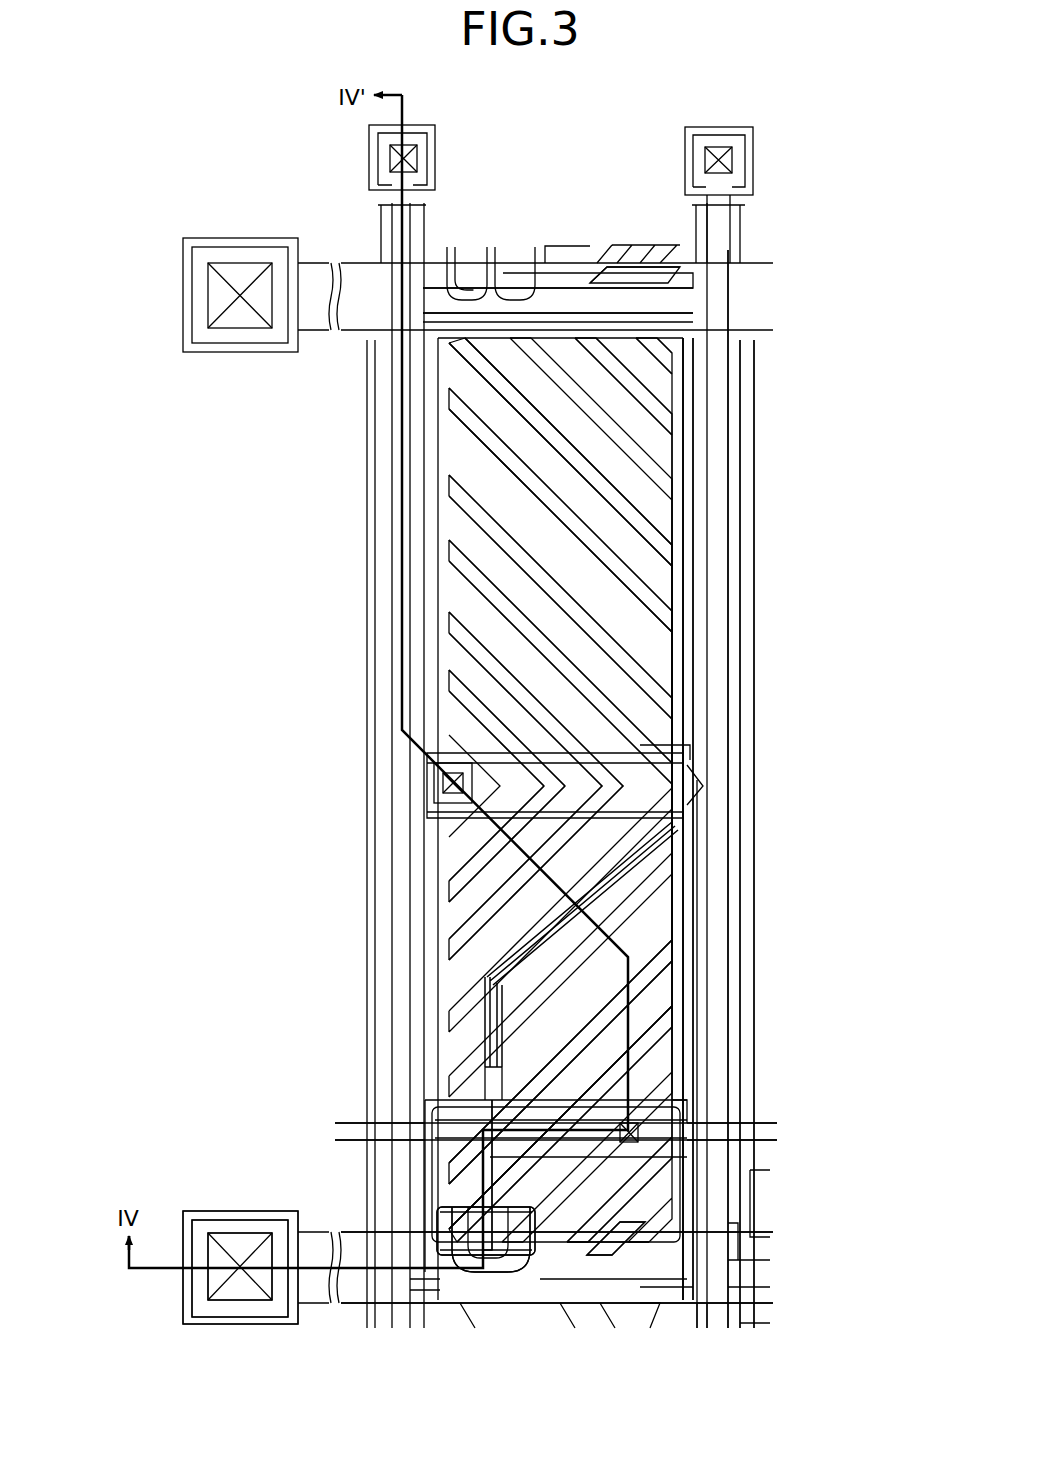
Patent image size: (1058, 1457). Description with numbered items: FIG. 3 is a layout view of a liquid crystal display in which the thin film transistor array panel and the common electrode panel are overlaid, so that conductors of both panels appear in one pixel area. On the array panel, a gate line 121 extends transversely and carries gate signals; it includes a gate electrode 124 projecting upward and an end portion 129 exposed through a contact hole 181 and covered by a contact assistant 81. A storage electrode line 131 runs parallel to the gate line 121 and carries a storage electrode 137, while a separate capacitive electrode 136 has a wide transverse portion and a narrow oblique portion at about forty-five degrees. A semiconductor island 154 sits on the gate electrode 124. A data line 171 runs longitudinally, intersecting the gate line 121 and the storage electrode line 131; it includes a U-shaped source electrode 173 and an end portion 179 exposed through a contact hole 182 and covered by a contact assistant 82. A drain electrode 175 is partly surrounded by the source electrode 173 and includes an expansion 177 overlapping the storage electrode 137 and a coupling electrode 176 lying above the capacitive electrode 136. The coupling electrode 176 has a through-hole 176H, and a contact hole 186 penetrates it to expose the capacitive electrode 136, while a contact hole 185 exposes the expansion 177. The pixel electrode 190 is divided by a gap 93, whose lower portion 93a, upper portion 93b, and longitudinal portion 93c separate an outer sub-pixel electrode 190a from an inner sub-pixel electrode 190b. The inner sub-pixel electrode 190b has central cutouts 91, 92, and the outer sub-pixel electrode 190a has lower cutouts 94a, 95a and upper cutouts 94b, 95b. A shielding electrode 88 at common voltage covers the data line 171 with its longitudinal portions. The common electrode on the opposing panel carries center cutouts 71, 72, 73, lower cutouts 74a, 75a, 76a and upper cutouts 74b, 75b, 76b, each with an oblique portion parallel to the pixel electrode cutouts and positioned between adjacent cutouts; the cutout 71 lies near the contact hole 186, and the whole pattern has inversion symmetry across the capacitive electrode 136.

The contact hole 182 is at (393, 150).
The contact assistant 82 is at (435, 140).
The end portion of data line 179 is at (427, 180).
The upper cutout of common electrode 76b is at (685, 353).
The upper cutout 95b is at (657, 388).
The upper cutout 94b is at (485, 383).
The upper cutout of common electrode 74b is at (468, 437).
The upper cutout of common electrode 75b is at (652, 440).
The data line 171 is at (710, 473).
The upper portion of gap 93b is at (481, 527).
The inner sub-pixel electrode 190b is at (440, 562).
The shielding electrode 88 is at (700, 575).
The center cutout of common electrode 73 is at (468, 583).
The central cutout 92 is at (453, 657).
The center cutout of common electrode 72 is at (453, 690).
The pixel electrode 190 is at (170, 764).
The outer sub-pixel electrode 190a is at (688, 1015).
The center cutout of common electrode 71 is at (445, 735).
The capacitive electrode 136 is at (642, 747).
The through-hole 176H is at (443, 783).
The coupling electrode 176 is at (442, 797).
The contact hole 186 is at (440, 830).
The gap 93 is at (175, 865).
The lower portion of gap 93a is at (642, 935).
The longitudinal portion of gap 93c is at (687, 826).
The central cutout 91 is at (440, 850).
The lower cutout of common electrode 74a is at (657, 985).
The lower cutout 94a is at (657, 1045).
The expansion 177 is at (482, 1100).
The storage electrode 137 is at (682, 1100).
The storage electrode line 131 is at (345, 1123).
The contact hole 185 is at (640, 1132).
The drain electrode 175 is at (480, 1172).
The gate electrode 124 is at (450, 1215).
The lower cutout of common electrode 75a is at (604, 1178).
The lower cutout 95a is at (634, 1215).
The contact assistant 81 is at (220, 1211).
The contact hole 181 is at (208, 1278).
The end portion of gate line 129 is at (190, 1300).
The semiconductor island 154 is at (460, 1300).
The source electrode 173 is at (500, 1282).
The gate line 121 is at (590, 1303).
The lower cutout of common electrode 76a is at (622, 1262).